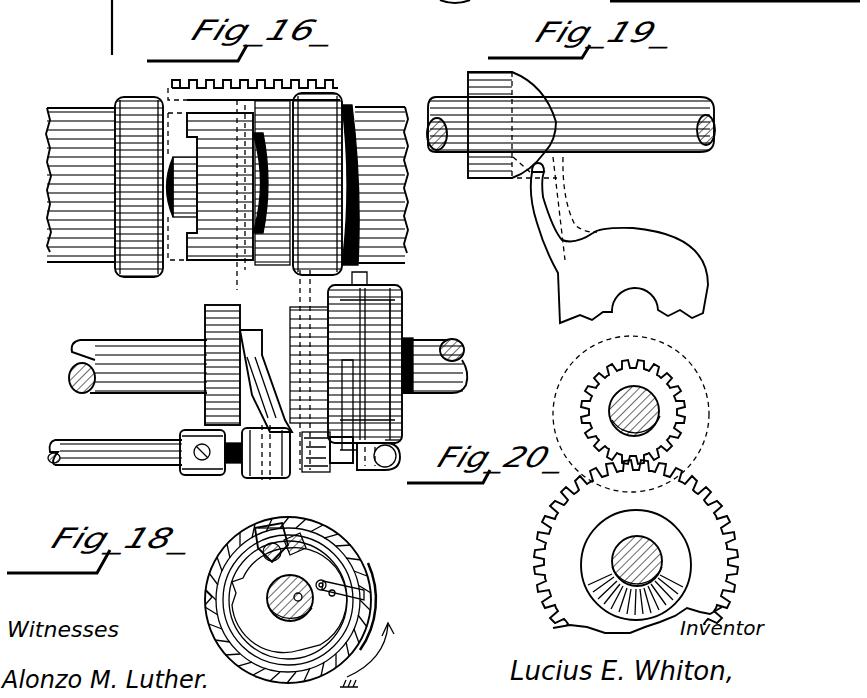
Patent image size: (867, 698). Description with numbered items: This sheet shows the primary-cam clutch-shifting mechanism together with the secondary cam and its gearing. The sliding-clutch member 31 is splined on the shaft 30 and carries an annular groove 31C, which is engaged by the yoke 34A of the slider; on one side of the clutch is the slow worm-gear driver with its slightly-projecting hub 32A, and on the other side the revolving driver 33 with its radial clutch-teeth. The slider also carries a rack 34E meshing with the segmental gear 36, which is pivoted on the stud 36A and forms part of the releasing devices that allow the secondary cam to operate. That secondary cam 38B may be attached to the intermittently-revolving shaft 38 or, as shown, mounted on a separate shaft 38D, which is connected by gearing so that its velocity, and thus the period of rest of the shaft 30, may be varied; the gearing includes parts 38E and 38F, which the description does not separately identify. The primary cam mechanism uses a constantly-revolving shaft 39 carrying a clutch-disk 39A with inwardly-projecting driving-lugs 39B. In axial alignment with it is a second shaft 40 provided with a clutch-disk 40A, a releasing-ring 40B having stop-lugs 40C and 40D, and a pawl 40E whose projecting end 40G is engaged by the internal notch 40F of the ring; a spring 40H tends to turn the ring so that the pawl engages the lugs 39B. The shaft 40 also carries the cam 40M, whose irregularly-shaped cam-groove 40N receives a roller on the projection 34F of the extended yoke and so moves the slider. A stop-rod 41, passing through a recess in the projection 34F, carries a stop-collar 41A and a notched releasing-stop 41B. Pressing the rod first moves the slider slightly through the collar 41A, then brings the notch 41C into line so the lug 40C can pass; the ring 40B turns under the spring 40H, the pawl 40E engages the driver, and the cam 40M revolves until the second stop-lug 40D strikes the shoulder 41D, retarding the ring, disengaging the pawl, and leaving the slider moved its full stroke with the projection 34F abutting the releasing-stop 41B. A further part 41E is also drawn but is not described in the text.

In FIG. 16, the shaft 30 is at (158, 210).
In FIG. 16, the sliding-clutch member 31 is at (186, 178).
In FIG. 16, the annular groove 31C is at (270, 170).
In FIG. 16, the projecting hub 32A is at (80, 143).
In FIG. 16, the revolving driver 33 is at (381, 185).
In FIG. 16, the rack 34E is at (302, 90).
In FIG. 16, the yoke 34A is at (267, 278).
In FIG. 16, the projection 34F is at (262, 478).
In FIG. 19, the segmental gear 36 is at (619, 240).
In FIG. 19, the stud 36A is at (545, 203).
In FIG. 20, the intermittently-revolving shaft 38 is at (630, 408).
In FIG. 19, the cam 38B is at (488, 85).
In FIG. 20, the cam 38B is at (636, 565).
In FIG. 19, the separate shaft 38D is at (668, 84).
In FIG. 20, the separate shaft 38D is at (630, 567).
In FIG. 20, the bore 38E is at (648, 447).
In FIG. 20, the gear 38F is at (672, 505).
In FIG. 16, the constantly-revolving shaft 39 is at (466, 365).
In FIG. 16, the clutch-disk 39A is at (380, 335).
In FIG. 18, the driving-lugs 39B is at (327, 560).
In FIG. 16, the shaft 40 is at (76, 349).
In FIG. 18, the shaft 40 is at (290, 598).
In FIG. 16, the clutch-disk 40A is at (345, 310).
In FIG. 18, the clutch-disk 40A is at (308, 576).
In FIG. 16, the releasing-ring 40B is at (352, 325).
In FIG. 18, the releasing-ring 40B is at (357, 575).
In FIG. 16, the stop-lug 40C is at (368, 280).
In FIG. 18, the stop-lug 40C is at (205, 598).
In FIG. 16, the second stop-lug 40D is at (362, 420).
In FIG. 18, the second stop-lug 40D is at (372, 605).
In FIG. 18, the pawl 40E is at (287, 548).
In FIG. 18, the internal notch 40F is at (256, 530).
In FIG. 18, the projecting end 40G is at (268, 527).
In FIG. 18, the spring 40H is at (368, 594).
In FIG. 16, the cam 40M is at (218, 340).
In FIG. 16, the cam-groove 40N is at (245, 372).
In FIG. 16, the stop-rod 41 is at (97, 455).
In FIG. 16, the stop-collar 41A is at (195, 470).
In FIG. 16, the notched releasing-stop 41B is at (314, 467).
In FIG. 16, the notch 41C is at (382, 470).
In FIG. 16, the shoulder 41D is at (350, 475).
In FIG. 16, the bracket 41E is at (392, 450).